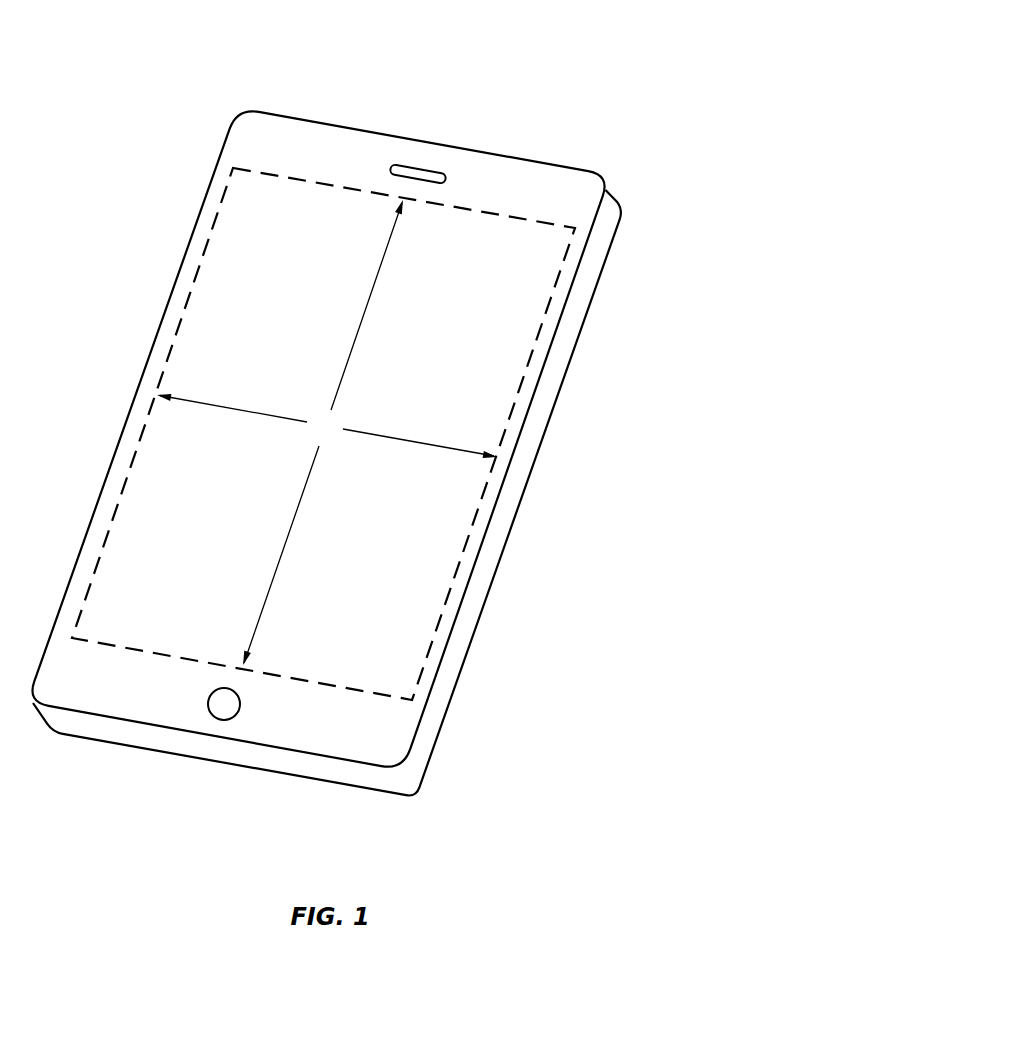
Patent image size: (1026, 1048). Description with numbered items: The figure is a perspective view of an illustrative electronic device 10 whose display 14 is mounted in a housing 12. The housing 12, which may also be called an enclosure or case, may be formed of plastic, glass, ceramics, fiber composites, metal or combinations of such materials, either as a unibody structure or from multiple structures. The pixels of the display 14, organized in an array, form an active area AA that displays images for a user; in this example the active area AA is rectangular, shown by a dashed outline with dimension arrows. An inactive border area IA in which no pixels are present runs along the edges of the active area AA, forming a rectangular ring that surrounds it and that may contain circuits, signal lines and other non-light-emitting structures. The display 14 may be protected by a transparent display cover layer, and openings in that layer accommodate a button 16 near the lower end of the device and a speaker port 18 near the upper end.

The electronic device 10 is at (660, 55).
The housing 12 is at (597, 293).
The display 14 is at (514, 268).
The button 16 is at (224, 721).
The speaker port 18 is at (414, 165).
The inactive border area IA is at (516, 182).
The active area AA is at (327, 432).